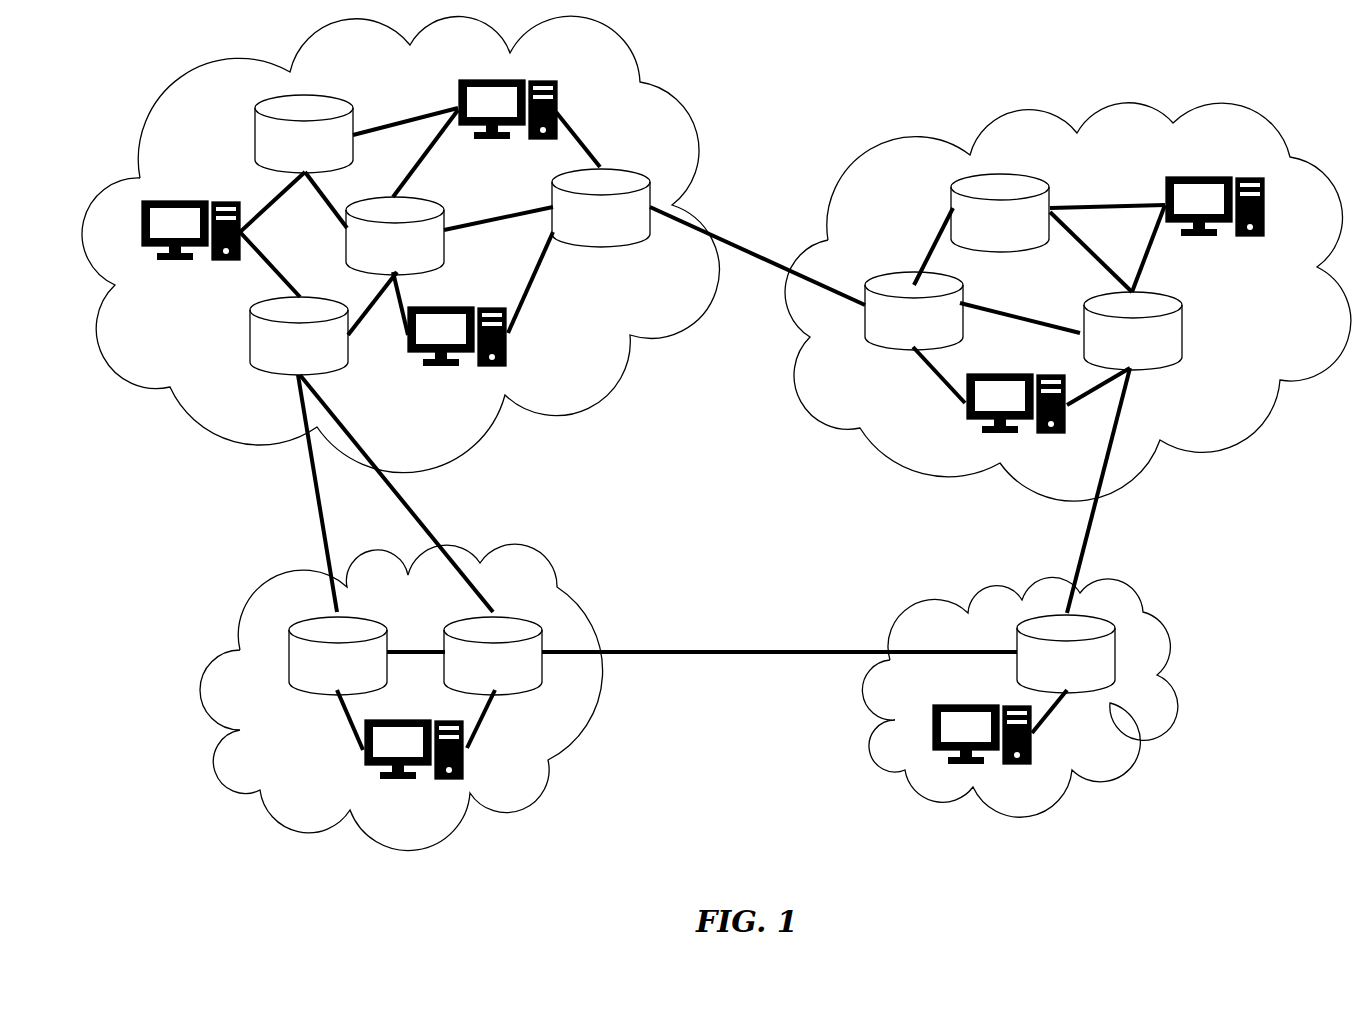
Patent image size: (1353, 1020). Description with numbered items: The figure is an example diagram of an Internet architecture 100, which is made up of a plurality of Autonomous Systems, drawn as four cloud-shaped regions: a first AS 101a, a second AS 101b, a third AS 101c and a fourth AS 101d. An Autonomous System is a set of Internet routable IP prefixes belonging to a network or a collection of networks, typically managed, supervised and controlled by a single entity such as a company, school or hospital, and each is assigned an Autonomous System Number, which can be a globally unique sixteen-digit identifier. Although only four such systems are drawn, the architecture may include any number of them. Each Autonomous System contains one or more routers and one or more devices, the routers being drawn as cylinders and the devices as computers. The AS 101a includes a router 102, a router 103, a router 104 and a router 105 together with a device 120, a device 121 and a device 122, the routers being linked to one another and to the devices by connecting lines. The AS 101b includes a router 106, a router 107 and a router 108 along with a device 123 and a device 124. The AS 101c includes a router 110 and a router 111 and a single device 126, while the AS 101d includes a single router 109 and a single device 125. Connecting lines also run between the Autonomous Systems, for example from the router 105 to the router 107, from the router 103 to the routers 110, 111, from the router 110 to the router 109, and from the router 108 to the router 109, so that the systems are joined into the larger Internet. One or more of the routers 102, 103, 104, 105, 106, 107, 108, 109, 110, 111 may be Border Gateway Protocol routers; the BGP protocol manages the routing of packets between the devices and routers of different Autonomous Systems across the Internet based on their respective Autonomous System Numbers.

The Internet architecture 100 is at (802, 73).
The Autonomous System 101a is at (400, 244).
The Autonomous System 101b is at (1068, 296).
The Autonomous System 101c is at (394, 697).
The Autonomous System 101d is at (1027, 697).
The router 102 is at (304, 134).
The router 103 is at (299, 336).
The router 104 is at (395, 236).
The router 105 is at (601, 208).
The router 106 is at (1000, 213).
The router 107 is at (914, 311).
The router 108 is at (1133, 331).
The router 109 is at (1066, 654).
The router 110 is at (493, 656).
The router 111 is at (338, 656).
The device 120 is at (191, 230).
The device 121 is at (508, 109).
The device 122 is at (457, 336).
The device 123 is at (1016, 403).
The device 124 is at (1215, 206).
The device 125 is at (982, 734).
The device 126 is at (414, 749).